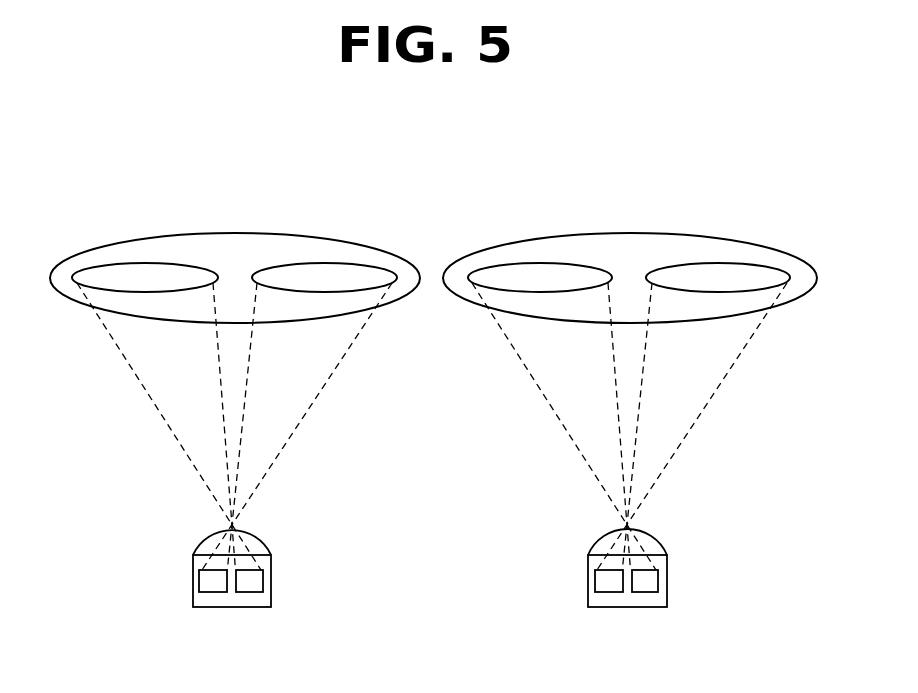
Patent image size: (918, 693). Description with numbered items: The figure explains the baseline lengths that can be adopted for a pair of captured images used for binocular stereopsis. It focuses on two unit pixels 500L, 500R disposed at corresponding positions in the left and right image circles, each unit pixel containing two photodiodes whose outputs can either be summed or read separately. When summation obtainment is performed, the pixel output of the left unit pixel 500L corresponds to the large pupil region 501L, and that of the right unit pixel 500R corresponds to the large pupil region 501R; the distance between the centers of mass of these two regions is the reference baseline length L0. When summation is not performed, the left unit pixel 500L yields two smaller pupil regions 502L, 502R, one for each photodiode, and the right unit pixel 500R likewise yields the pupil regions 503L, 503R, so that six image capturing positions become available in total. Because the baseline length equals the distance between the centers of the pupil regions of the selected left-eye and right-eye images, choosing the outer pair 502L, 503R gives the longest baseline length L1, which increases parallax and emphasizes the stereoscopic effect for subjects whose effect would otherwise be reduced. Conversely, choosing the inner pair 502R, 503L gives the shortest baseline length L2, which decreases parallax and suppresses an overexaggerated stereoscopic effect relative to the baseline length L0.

The pupil region 501L is at (272, 233).
The pupil region 501R is at (671, 233).
The pupil region 502L is at (92, 293).
The pupil region 502R is at (361, 293).
The pupil region 503L is at (492, 293).
The pupil region 503R is at (757, 293).
The unit pixel 500L is at (193, 578).
The unit pixel 500R is at (588, 578).
The longest baseline length L1 is at (145, 277).
The baseline length L0 is at (235, 277).
The shortest baseline length L2 is at (323, 277).